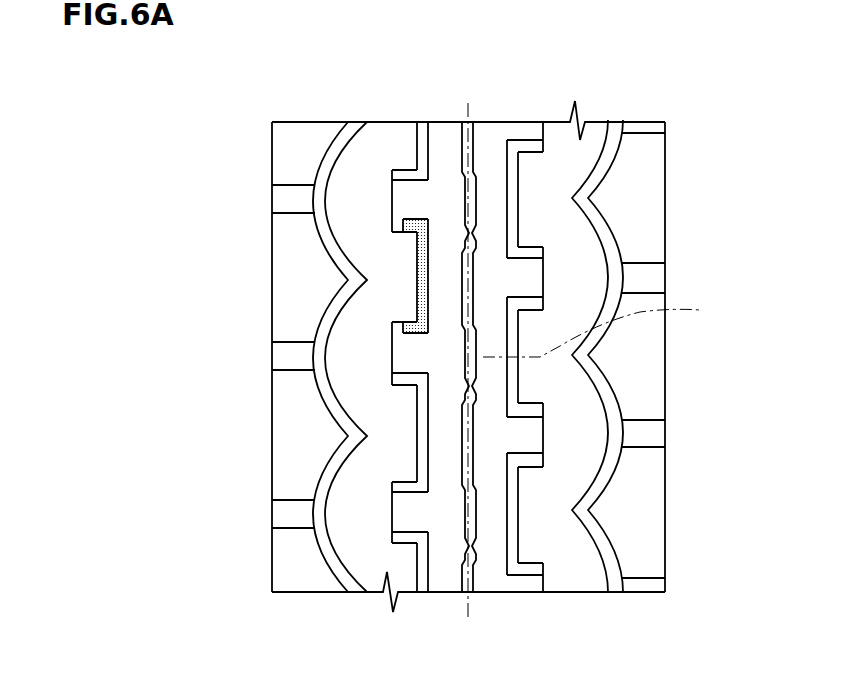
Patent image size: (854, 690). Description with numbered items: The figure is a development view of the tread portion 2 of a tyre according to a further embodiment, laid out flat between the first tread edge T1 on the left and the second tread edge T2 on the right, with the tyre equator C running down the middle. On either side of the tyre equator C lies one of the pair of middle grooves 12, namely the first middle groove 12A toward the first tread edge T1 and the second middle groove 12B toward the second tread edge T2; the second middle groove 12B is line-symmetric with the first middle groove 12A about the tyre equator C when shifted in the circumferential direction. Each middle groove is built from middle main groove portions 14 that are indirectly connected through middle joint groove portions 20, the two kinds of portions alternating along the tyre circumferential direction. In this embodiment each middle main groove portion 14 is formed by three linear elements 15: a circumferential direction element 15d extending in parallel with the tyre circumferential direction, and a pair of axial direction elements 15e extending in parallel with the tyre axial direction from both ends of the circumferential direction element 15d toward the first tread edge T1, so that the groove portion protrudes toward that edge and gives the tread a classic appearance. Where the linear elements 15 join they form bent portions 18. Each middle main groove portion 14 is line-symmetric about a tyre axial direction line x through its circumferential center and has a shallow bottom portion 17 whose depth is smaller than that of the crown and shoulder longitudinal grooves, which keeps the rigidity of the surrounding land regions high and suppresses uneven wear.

The tread portion 2 is at (645, 98).
The middle grooves 12 is at (346, 323).
The first middle groove 12A is at (319, 357).
The second middle groove 12B is at (512, 153).
The middle main groove portions 14 is at (430, 236).
The linear elements 15 is at (433, 357).
The circumferential direction element 15d is at (423, 443).
The axial direction elements 15e is at (407, 381).
The shallow bottom portion 17 is at (418, 278).
The bent portions 18 is at (426, 370).
The middle joint groove portions 20 is at (545, 435).
The first tread edge T1 is at (270, 140).
The second tread edge T2 is at (668, 135).
The tyre equator C is at (466, 349).
The tyre axial direction line x is at (601, 328).